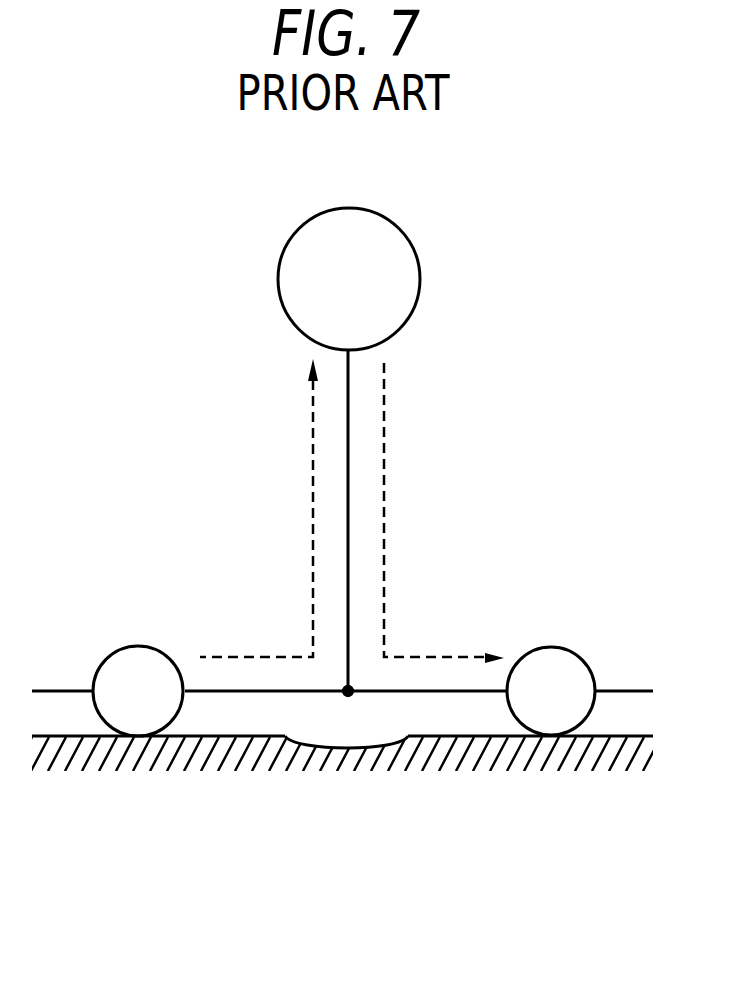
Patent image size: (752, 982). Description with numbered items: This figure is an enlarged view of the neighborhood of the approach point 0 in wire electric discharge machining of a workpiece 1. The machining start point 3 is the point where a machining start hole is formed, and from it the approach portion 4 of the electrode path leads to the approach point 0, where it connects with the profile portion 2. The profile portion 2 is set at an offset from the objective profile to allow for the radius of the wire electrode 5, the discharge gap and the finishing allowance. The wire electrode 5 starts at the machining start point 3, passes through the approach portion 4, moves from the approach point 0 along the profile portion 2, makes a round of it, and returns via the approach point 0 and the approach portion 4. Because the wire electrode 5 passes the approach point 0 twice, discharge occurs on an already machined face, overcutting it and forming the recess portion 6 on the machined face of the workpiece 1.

The workpiece 1 is at (220, 758).
The profile portion 2 is at (628, 690).
The machining start point 3 is at (347, 208).
The approach portion 4 is at (349, 497).
The wire electrode 5 is at (140, 647).
The recess portion 6 is at (349, 740).
The approach point 0 is at (362, 673).